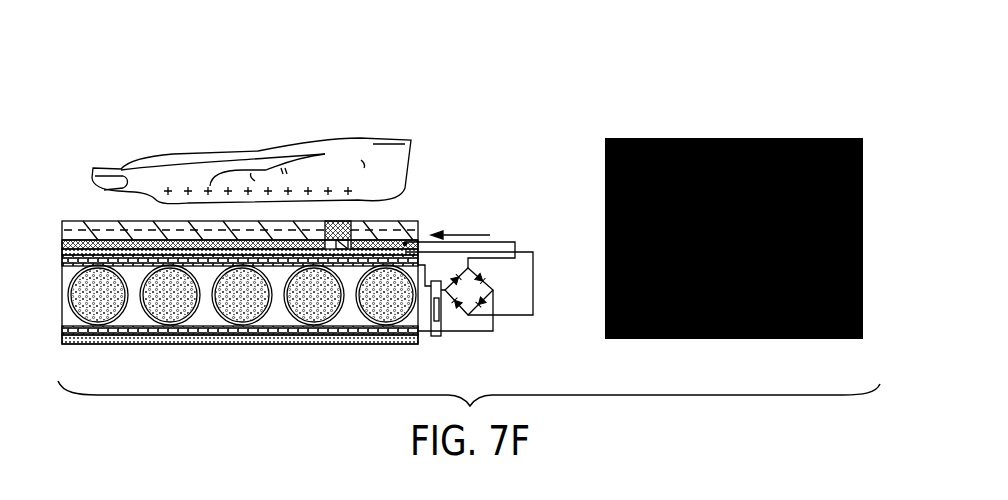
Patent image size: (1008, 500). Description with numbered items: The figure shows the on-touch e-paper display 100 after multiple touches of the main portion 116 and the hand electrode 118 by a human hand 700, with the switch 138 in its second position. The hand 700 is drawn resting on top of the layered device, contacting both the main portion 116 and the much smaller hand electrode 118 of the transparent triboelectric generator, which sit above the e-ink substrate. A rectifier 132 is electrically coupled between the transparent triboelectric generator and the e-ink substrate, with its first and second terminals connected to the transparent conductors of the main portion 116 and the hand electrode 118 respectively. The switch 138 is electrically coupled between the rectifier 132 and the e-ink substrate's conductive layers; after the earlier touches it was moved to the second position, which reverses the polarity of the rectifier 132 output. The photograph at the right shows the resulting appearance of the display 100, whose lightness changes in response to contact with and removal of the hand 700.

The on-touch e-paper display 100 is at (465, 195).
The main portion 116 is at (71, 203).
The hand electrode 118 is at (353, 221).
The rectifier 132 is at (460, 282).
The switch 138 is at (433, 327).
The human hand 700 is at (262, 142).